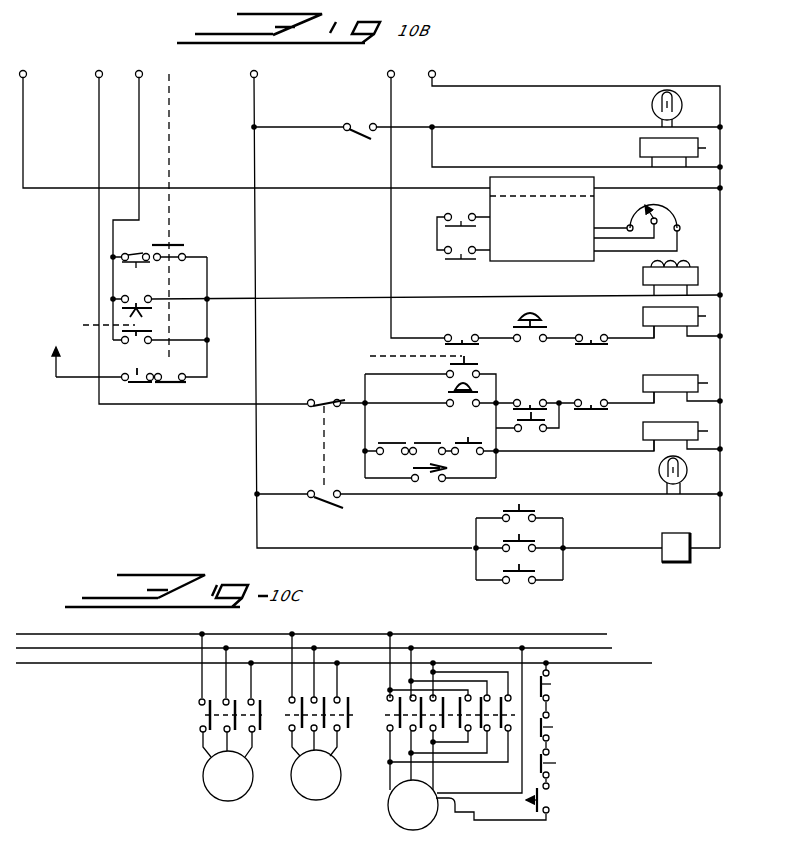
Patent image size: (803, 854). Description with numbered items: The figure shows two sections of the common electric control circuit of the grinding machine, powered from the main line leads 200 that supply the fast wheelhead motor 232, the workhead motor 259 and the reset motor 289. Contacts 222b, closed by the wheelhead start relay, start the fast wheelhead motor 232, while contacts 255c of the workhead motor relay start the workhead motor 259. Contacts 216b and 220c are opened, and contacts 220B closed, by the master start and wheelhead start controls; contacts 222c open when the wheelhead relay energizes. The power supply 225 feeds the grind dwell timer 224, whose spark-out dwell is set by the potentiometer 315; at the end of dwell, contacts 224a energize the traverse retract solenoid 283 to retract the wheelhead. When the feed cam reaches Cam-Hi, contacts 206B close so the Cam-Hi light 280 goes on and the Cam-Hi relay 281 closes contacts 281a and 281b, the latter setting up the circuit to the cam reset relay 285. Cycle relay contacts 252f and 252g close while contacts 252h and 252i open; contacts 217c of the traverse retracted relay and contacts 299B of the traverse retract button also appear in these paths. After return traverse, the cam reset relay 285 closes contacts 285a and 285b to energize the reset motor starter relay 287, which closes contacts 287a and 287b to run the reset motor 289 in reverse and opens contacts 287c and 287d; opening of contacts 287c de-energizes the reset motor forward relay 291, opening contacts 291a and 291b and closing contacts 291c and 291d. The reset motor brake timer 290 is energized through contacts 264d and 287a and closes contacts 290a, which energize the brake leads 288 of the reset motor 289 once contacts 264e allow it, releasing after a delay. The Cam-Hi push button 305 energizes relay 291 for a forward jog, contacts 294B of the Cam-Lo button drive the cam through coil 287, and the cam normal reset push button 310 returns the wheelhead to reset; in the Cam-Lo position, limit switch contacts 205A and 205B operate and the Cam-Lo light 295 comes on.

In FIG. 10B, the contacts of limit switch 206 206B is at (358, 133).
In FIG. 10B, the Cam-Hi light 280 is at (652, 104).
In FIG. 10B, the Cam-Hi relay 281 is at (640, 148).
In FIG. 10B, the contacts of relay 222 222c is at (138, 254).
In FIG. 10B, the contacts of Wheelhead Start button 220B is at (185, 252).
In FIG. 10B, the contacts of grind dwell timer 224a is at (128, 297).
In FIG. 10B, the contacts of Traverse Retract button 299B is at (130, 346).
In FIG. 10B, the contacts of relay 216 216b is at (129, 384).
In FIG. 10B, the contacts of Wheelhead Start button 220c is at (186, 383).
In FIG. 10B, the power supply 225 is at (552, 200).
In FIG. 10B, the grind dwell timer 224 is at (550, 251).
In FIG. 10B, the contacts of Cycle Relay 252f is at (458, 216).
In FIG. 10B, the contacts of Cam-Hi relay 281a is at (462, 263).
In FIG. 10B, the potentiometer 315 is at (670, 208).
In FIG. 10B, the traverse retract solenoid 283 is at (643, 276).
In FIG. 10B, the contacts of Cycle Relay 252h is at (462, 336).
In FIG. 10B, the Cam-Hi control push button 305 is at (527, 312).
In FIG. 10B, the contacts of reset motor starter relay 287c is at (591, 336).
In FIG. 10B, the reset motor forward relay 291 is at (688, 314).
In FIG. 10B, the contacts of Cam-Lo push button 294B is at (470, 368).
In FIG. 10B, the cam normal reset push button 310 is at (447, 387).
In FIG. 10B, the contacts of limit switch 205 205A is at (323, 407).
In FIG. 10B, the contacts of Cycle Relay 252i is at (528, 399).
In FIG. 10B, the contacts of reset motor forward relay 291c is at (592, 399).
In FIG. 10B, the reset motor starter relay 287 is at (690, 385).
In FIG. 10B, the contacts of traverse retracted relay 217c is at (392, 442).
In FIG. 10B, the contacts of Cycle Relay 252g is at (430, 442).
In FIG. 10B, the contacts of Cam-Hi relay 281b is at (472, 442).
In FIG. 10B, the contacts of cam reset relay 285a is at (521, 431).
In FIG. 10B, the cam reset relay 285 is at (660, 426).
In FIG. 10B, the contacts of cam reset relay 285b is at (453, 473).
In FIG. 10B, the Cam-Lo light 295 is at (658, 470).
In FIG. 10B, the contacts of limit switch 205 205B is at (322, 500).
In FIG. 10B, the contacts of wheelhead feed clutch relay 264d is at (521, 510).
In FIG. 10B, the contacts of reset motor forward relay 291a is at (535, 546).
In FIG. 10B, the contacts of reset motor starter relay 287a is at (522, 583).
In FIG. 10B, the reset motor brake timer 290 is at (675, 556).
In FIG. 10C, the main line leads 200 is at (46, 635).
In FIG. 10C, the contacts of relay 222 222b is at (194, 731).
In FIG. 10C, the fast wheelhead motor 232 is at (244, 787).
In FIG. 10C, the contacts of workhead motor relay 255c is at (349, 730).
In FIG. 10C, the workhead motor 259 is at (332, 786).
In FIG. 10C, the contacts of reset motor forward relay 291b is at (400, 696).
In FIG. 10C, the contacts of reset motor starter relay 287b is at (461, 707).
In FIG. 10C, the reset motor 289 is at (429, 816).
In FIG. 10C, the brake leads 288 is at (448, 815).
In FIG. 10C, the contacts of reset motor starter relay 287d is at (549, 684).
In FIG. 10C, the contacts of reset motor forward relay 291d is at (549, 724).
In FIG. 10C, the contacts of wheelhead feed clutch relay 264e is at (551, 761).
In FIG. 10C, the contacts of reset motor brake timer 290a is at (539, 805).